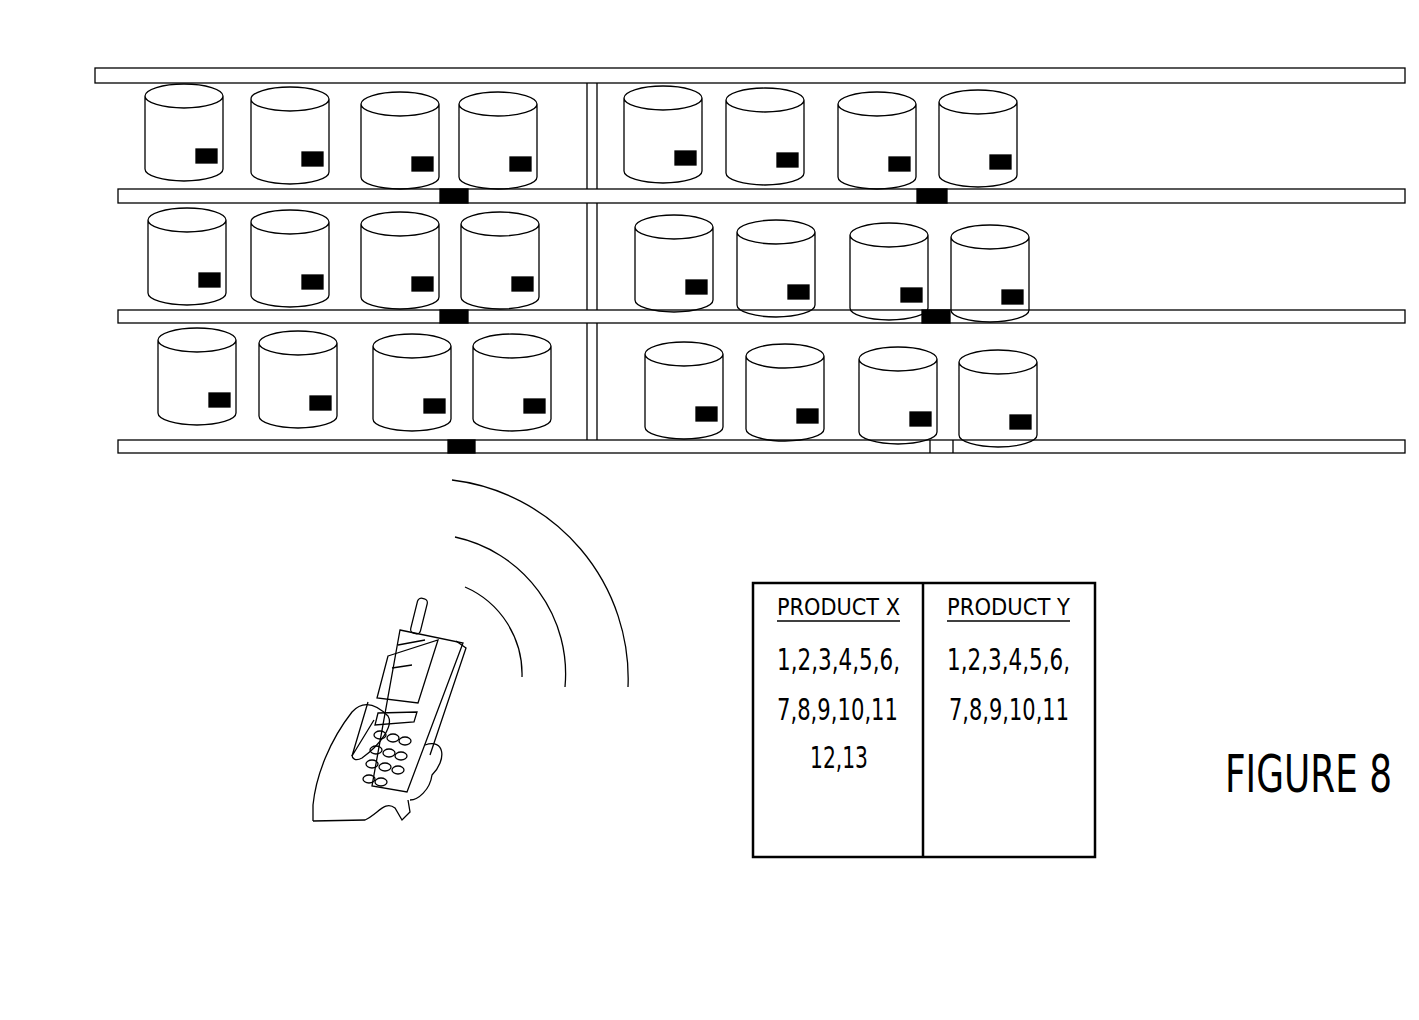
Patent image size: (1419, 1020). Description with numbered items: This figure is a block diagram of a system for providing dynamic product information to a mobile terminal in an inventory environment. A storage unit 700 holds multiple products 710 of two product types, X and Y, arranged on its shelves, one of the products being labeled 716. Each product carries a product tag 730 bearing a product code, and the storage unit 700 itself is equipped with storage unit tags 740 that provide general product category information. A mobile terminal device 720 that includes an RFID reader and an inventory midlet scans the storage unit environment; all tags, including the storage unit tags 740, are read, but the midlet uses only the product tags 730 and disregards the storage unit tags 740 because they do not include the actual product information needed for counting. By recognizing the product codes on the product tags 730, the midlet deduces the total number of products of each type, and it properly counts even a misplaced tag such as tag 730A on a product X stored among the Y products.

The storage unit 700 is at (1163, 74).
The products 710 is at (586, 265).
The product item X1 716 is at (152, 120).
The mobile terminal device 720 is at (388, 663).
The product tags 730 is at (196, 158).
The misplaced tag 730A is at (910, 421).
The storage unit tags 740 is at (937, 204).